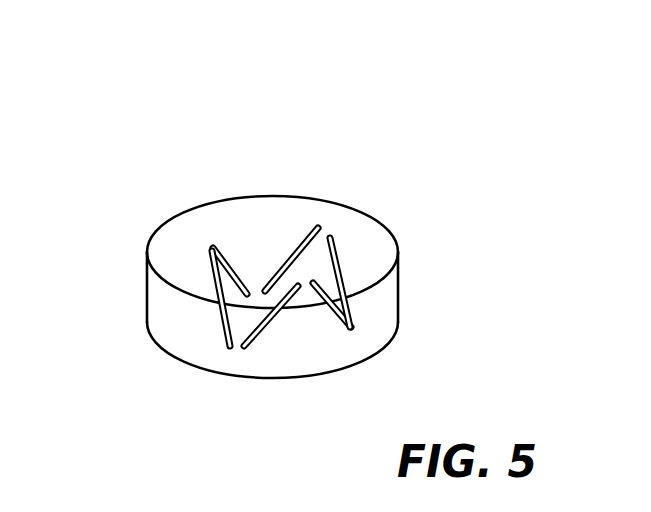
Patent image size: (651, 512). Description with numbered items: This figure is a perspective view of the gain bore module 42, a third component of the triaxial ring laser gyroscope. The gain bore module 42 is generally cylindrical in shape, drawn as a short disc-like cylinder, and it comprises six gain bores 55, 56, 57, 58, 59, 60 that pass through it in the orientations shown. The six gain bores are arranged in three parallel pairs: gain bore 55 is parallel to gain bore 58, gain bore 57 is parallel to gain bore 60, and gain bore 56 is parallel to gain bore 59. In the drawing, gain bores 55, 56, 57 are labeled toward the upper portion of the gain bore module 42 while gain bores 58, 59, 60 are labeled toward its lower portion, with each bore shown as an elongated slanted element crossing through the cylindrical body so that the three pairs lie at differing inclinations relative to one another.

The gain bore module 42 is at (148, 137).
The gain bore 55 is at (229, 253).
The gain bore 56 is at (295, 256).
The gain bore 57 is at (338, 253).
The gain bore 58 is at (348, 316).
The gain bore 59 is at (265, 330).
The gain bore 60 is at (225, 328).